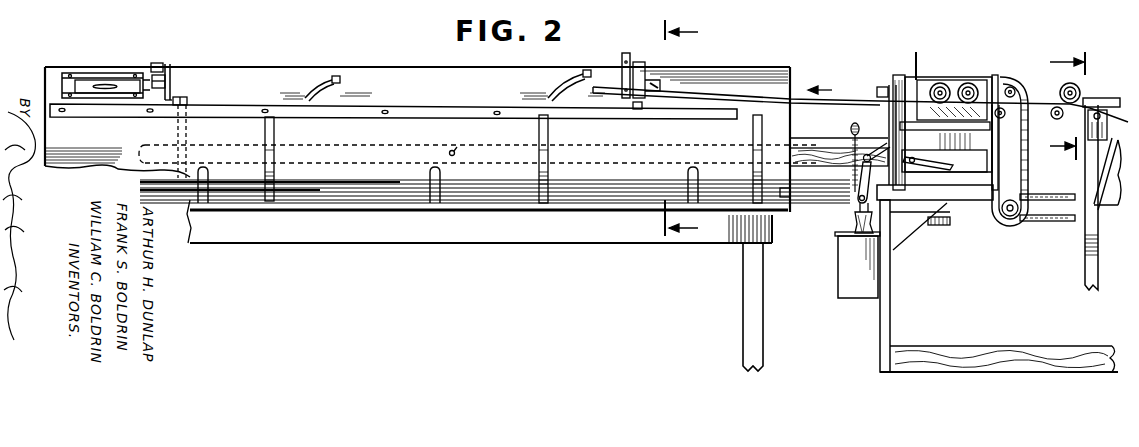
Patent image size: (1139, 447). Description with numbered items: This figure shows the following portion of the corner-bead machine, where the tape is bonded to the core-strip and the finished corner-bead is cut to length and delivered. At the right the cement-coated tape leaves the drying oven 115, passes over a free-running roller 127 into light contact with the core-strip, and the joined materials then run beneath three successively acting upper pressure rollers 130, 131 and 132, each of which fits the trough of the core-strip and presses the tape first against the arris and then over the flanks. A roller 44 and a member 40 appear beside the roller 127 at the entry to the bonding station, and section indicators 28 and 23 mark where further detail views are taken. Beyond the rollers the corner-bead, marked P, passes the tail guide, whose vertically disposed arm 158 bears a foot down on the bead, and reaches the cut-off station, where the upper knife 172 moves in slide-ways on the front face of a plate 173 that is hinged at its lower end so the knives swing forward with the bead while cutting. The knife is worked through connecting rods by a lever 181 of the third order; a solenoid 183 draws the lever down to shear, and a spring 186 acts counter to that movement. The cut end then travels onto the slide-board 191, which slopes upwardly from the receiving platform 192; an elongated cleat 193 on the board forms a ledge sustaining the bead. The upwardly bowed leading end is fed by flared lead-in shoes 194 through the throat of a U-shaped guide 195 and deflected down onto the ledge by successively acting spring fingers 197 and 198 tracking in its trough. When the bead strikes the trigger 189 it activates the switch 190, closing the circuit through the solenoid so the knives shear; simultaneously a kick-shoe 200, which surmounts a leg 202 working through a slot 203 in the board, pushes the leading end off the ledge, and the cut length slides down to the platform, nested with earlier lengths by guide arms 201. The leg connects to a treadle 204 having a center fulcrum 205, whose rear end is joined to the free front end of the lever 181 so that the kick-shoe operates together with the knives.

The Micro switch 190 is at (151, 70).
The kick-shoe 200 is at (170, 88).
The slot 203 is at (188, 99).
The trigger 189 is at (167, 96).
The leg 202 is at (187, 130).
The guide arms 201 is at (265, 130).
The spring finger 198 is at (306, 84).
The slide-board 191 is at (410, 70).
The elongated cleat 193 is at (455, 108).
The treadle 204 is at (358, 146).
The center fulcrum 205 is at (456, 149).
The spring finger 197 is at (552, 86).
The U-shaped guide 195 is at (626, 53).
The flared lead-in shoes 194 is at (660, 87).
The section line 23 is at (693, 130).
The receiving platform 192 is at (588, 213).
The panel P is at (853, 97).
The upper knife 172 is at (887, 90).
The vertically disposed arm 158 is at (918, 58).
The upper roller 132 is at (940, 83).
The upper roller 131 is at (968, 83).
The upper roller 130 is at (1010, 86).
The section line 28 is at (1056, 106).
The roller 44 is at (1062, 90).
The table bar 40 is at (1105, 98).
The free-running roller 127 is at (1057, 119).
The plate 173 is at (888, 125).
The lever 181 is at (868, 152).
The solenoid 183 is at (838, 269).
The spring 186 is at (948, 222).
The drying oven 115 is at (1098, 213).